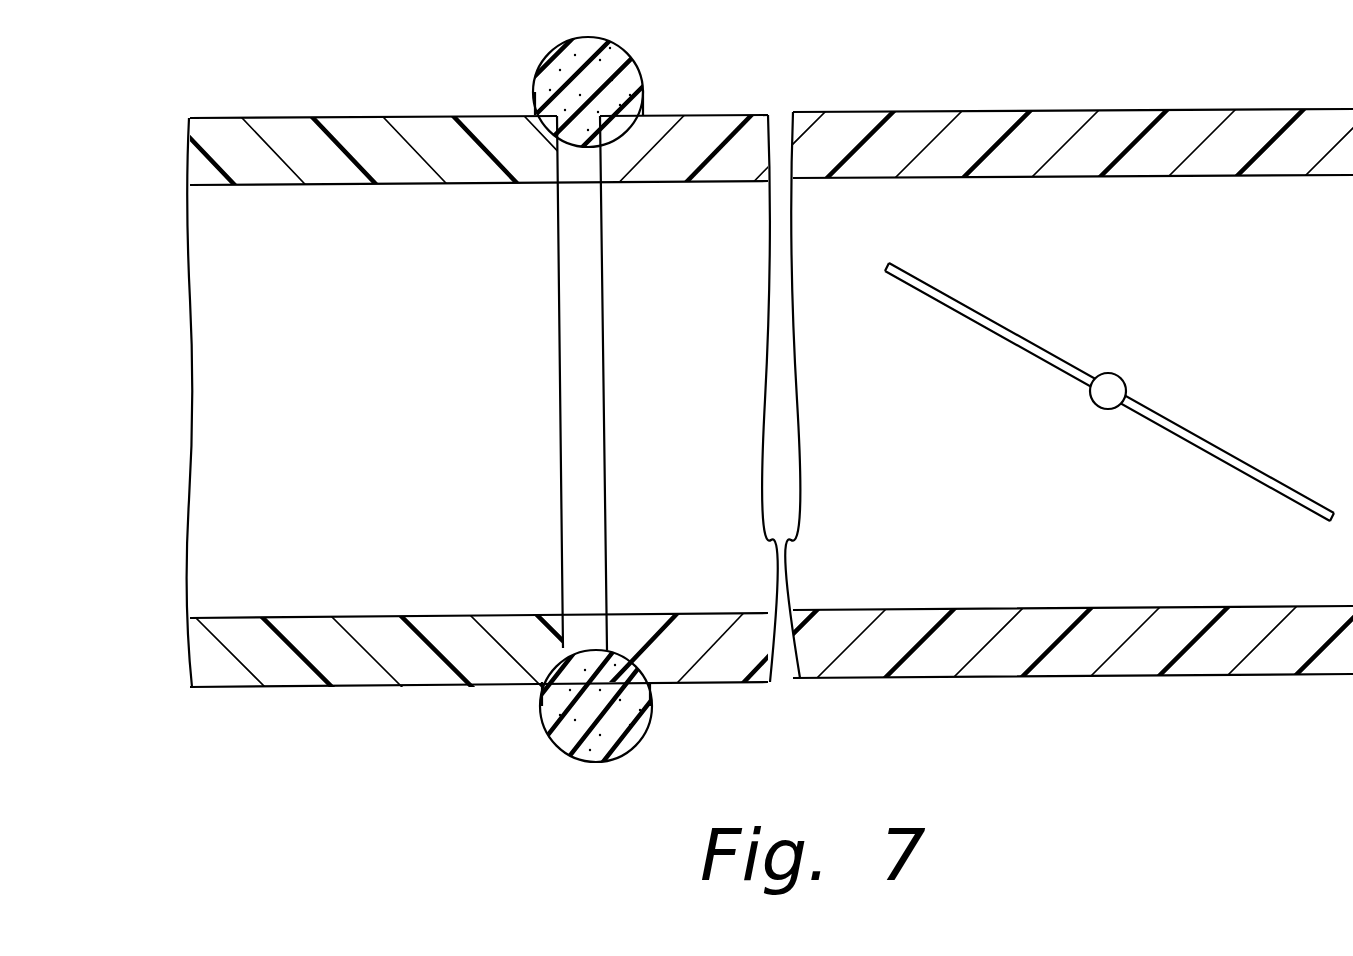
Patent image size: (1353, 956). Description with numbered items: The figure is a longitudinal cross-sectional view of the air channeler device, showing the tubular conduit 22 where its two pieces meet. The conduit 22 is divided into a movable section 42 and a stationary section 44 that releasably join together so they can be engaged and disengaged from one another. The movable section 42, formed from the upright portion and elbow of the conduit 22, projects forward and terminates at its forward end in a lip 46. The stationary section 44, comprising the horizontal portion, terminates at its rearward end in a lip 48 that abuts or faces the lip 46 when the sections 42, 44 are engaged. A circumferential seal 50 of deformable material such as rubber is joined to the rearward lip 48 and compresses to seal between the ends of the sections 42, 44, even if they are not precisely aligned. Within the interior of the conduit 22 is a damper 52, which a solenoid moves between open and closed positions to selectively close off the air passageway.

The conduit 22 is at (1068, 80).
The movable section 42 is at (350, 117).
The stationary section 44 is at (1245, 107).
The lip 46 is at (559, 232).
The lip 48 is at (605, 623).
The circumferential seal 50 is at (640, 733).
The damper 52 is at (1020, 336).